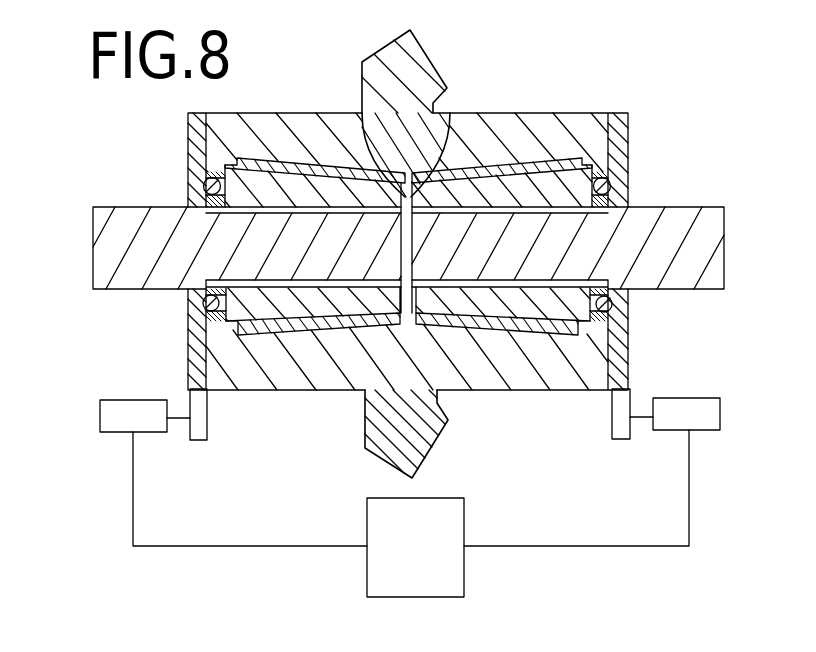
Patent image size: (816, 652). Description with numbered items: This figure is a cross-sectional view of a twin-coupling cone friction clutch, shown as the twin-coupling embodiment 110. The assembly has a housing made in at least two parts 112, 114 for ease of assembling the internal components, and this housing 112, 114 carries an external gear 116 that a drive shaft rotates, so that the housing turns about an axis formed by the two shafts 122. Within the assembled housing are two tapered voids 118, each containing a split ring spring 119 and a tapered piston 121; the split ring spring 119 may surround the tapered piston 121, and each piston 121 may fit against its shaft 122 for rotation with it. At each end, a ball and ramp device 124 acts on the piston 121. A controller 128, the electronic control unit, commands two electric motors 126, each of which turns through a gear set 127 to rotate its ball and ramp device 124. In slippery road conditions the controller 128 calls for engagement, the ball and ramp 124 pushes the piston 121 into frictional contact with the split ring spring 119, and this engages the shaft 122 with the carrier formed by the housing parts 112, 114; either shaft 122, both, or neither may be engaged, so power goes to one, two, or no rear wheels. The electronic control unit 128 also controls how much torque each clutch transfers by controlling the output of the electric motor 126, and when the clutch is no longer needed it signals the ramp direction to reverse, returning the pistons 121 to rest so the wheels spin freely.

The twin-coupling embodiment 110 is at (732, 183).
The housing part 112 is at (530, 392).
The housing part 114 is at (318, 392).
The external gear 116 is at (408, 62).
The tapered void 118 is at (362, 112).
The split ring spring 119 is at (294, 168).
The tapered piston 121 is at (247, 190).
The shaft 122 is at (112, 246).
The ball and ramp device 124 is at (190, 326).
The electric motor 126 is at (152, 432).
The gear set 127 is at (208, 425).
The controller 128 is at (457, 513).